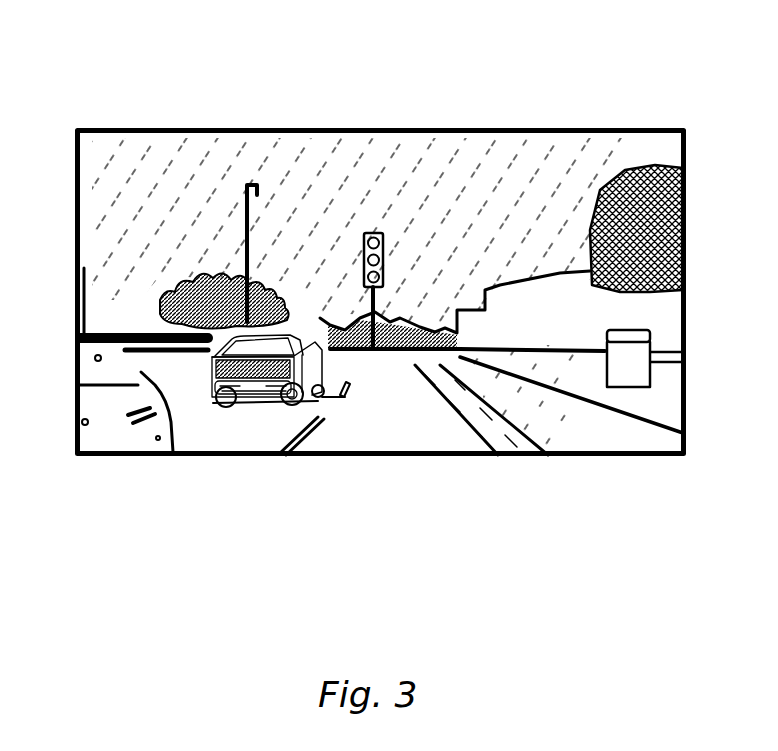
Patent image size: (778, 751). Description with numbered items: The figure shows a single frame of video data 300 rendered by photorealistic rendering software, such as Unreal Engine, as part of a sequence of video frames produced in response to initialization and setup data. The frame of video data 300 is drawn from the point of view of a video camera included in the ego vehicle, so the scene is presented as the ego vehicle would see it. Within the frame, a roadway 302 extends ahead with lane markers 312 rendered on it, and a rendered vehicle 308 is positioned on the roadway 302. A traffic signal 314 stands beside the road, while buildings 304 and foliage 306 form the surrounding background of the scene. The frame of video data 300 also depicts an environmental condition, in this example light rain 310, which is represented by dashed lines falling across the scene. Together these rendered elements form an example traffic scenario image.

The frame of video data 300 is at (155, 127).
The roadway 302 is at (262, 438).
The buildings 304 is at (506, 250).
The foliage 306 is at (150, 262).
The rendered vehicle 308 is at (323, 397).
The light rain 310 is at (359, 145).
The lane markers 312 is at (348, 384).
The traffic signal 314 is at (380, 231).